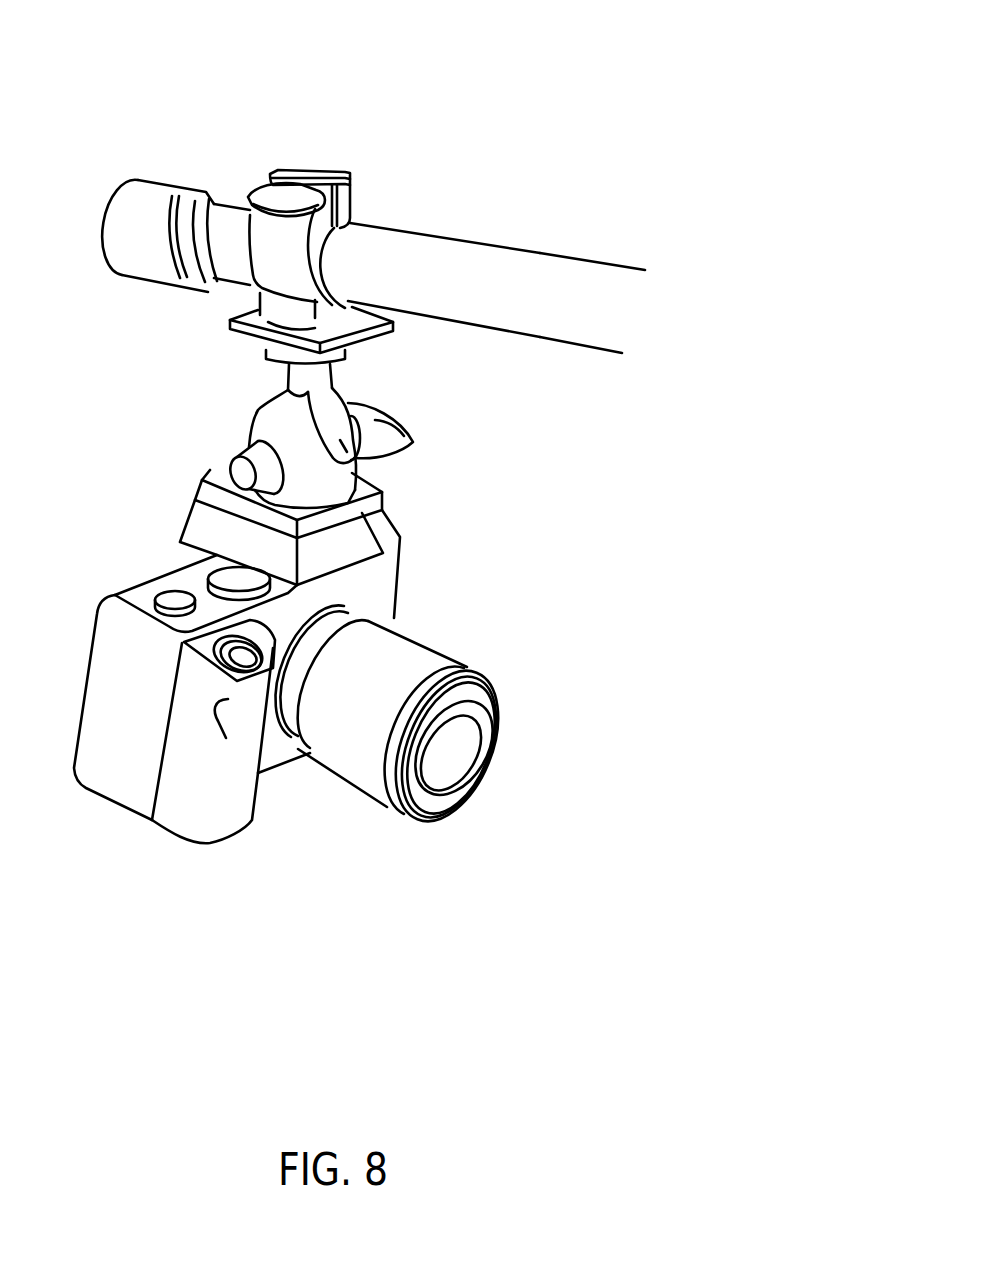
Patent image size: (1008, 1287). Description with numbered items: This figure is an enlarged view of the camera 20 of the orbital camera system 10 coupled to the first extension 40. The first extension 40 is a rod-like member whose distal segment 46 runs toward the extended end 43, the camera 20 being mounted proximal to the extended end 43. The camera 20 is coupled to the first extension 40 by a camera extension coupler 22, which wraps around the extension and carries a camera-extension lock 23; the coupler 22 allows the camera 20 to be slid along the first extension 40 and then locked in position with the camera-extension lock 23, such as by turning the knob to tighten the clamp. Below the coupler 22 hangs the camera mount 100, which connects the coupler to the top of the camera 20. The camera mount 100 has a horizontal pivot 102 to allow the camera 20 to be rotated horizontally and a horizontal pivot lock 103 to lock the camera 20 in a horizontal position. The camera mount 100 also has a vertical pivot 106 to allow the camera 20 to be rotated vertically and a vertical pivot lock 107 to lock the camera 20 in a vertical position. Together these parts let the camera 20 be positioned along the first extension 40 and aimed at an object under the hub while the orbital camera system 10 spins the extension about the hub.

The orbital camera system 10 is at (597, 91).
The camera 20 is at (160, 785).
The camera extension coupler 22 is at (347, 180).
The camera-extension lock 23 is at (290, 197).
The first extension 40 is at (443, 265).
The extended end 43 is at (147, 197).
The distal segment 46 is at (543, 270).
The camera mount 100 is at (368, 338).
The horizontal pivot 102 is at (247, 330).
The horizontal pivot lock 103 is at (290, 375).
The vertical pivot 106 is at (360, 468).
The vertical pivot lock 107 is at (388, 420).